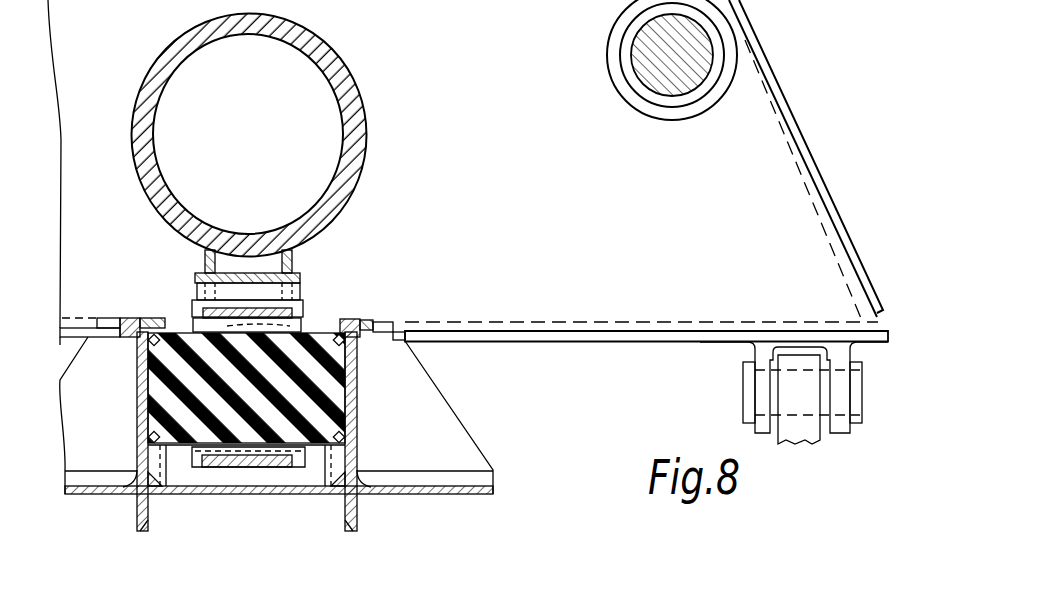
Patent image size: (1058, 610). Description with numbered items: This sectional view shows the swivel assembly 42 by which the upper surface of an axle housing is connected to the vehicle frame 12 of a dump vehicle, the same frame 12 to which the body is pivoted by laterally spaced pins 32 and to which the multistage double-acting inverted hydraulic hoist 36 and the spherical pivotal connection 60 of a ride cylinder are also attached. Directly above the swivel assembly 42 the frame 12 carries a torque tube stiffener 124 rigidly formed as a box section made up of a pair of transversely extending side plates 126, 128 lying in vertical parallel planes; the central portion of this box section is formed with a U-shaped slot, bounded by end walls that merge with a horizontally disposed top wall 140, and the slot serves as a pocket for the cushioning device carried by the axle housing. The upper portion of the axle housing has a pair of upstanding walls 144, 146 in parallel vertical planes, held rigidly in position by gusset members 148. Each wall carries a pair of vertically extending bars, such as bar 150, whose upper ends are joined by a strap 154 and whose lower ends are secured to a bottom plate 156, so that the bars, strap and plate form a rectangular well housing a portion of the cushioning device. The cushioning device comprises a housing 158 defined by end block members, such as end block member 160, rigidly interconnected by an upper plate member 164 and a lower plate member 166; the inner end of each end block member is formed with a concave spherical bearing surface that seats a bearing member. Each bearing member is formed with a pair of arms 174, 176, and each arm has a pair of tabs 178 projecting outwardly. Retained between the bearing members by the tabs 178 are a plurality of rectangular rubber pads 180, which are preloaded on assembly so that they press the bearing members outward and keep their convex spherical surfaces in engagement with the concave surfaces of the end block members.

The frame 12 is at (770, 60).
The pins 32 is at (650, 75).
The multistage double-acting inverted hydraulic hoist 36 is at (176, 473).
The swivel assembly 42 is at (106, 302).
The spherical pivotal connection 60 is at (862, 413).
The torque tube stiffener 124 is at (367, 117).
The side plate 126 is at (205, 263).
The side plate 128 is at (293, 263).
The top wall 140 is at (300, 276).
The wall 144 is at (157, 494).
The wall 146 is at (338, 481).
The gusset members 148 is at (97, 358).
The vertically extending bar 150 is at (150, 458).
The strap 154 is at (165, 291).
The bottom plate 156 is at (192, 494).
The housing 158 is at (318, 314).
The end block member 160 is at (293, 455).
The upper plate member 164 is at (235, 312).
The lower plate member 166 is at (272, 463).
The arm 174 is at (183, 302).
The arm 176 is at (362, 338).
The tabs 178 is at (137, 408).
The rectangular rubber pads 180 is at (243, 427).